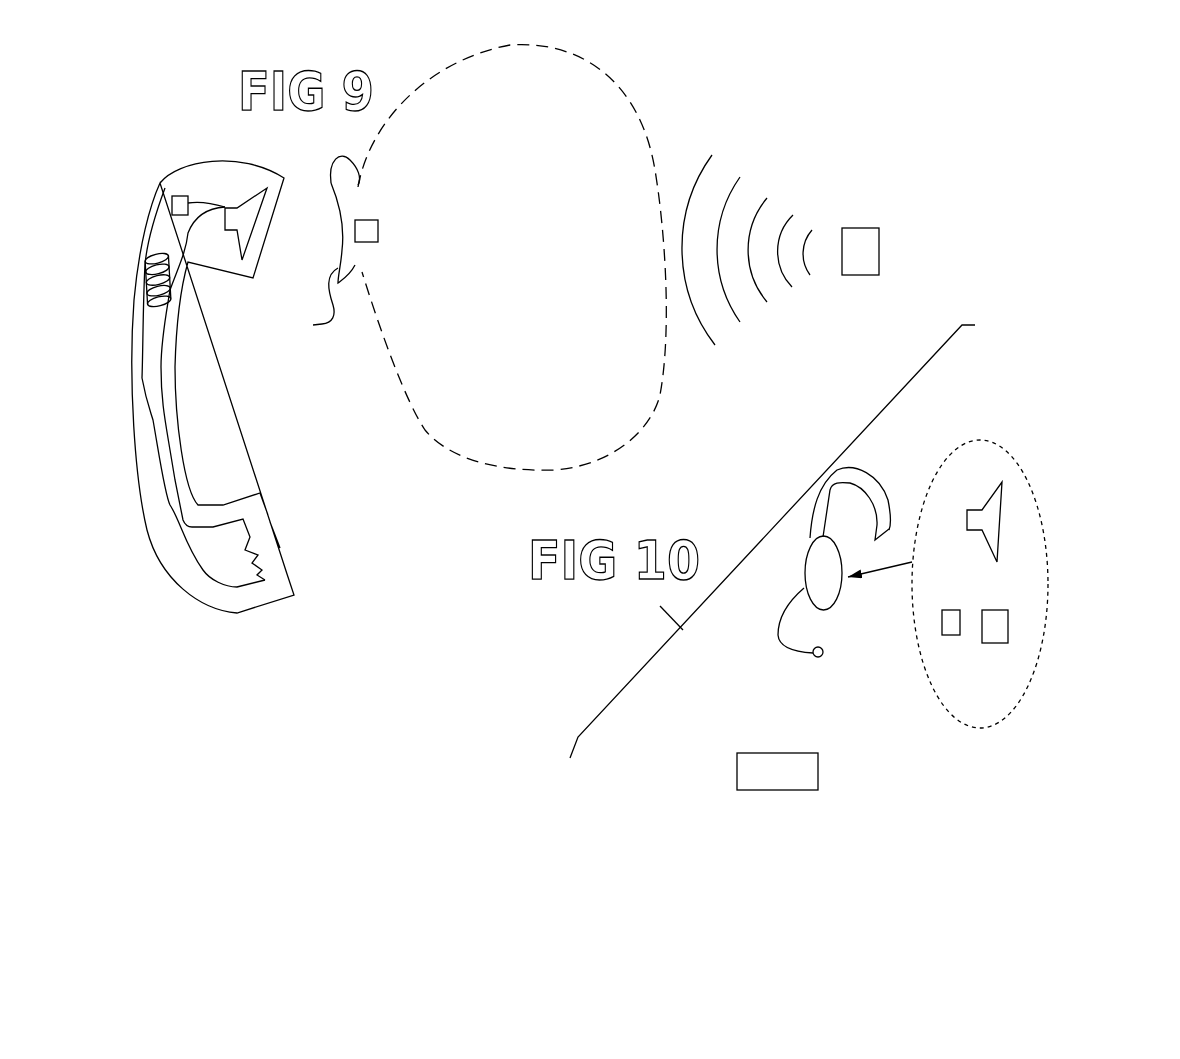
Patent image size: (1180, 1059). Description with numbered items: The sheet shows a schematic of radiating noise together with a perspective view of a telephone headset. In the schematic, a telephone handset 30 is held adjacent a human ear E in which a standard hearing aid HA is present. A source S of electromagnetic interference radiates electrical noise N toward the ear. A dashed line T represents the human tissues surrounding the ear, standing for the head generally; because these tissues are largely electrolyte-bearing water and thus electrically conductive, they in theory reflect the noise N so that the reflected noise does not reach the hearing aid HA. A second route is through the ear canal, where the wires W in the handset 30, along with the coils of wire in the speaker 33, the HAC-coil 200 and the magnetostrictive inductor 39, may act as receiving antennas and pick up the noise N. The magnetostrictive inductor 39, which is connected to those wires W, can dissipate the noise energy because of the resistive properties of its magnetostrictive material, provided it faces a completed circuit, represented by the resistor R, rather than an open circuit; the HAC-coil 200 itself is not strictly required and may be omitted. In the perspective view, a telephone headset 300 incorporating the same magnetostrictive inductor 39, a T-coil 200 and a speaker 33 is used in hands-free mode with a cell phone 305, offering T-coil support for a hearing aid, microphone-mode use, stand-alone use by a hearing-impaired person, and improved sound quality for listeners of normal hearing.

In FIG. 9, the HAC-coil 200 is at (178, 196).
In FIG. 10, the HAC-coil 200 is at (942, 622).
In FIG. 9, the speaker 33 is at (251, 195).
In FIG. 10, the speaker 33 is at (993, 496).
In FIG. 9, the magnetostrictive inductor 39 is at (134, 242).
In FIG. 10, the magnetostrictive inductor 39 is at (1008, 622).
In FIG. 9, the telephone handset 30 is at (176, 380).
In FIG. 10, the telephone headset 300 is at (771, 599).
In FIG. 10, the cell phone 305 is at (777, 771).
In FIG. 9, the wires W is at (175, 231).
In FIG. 9, the resistor R is at (275, 560).
In FIG. 9, the hearing aid HA is at (378, 228).
In FIG. 9, the ear E is at (326, 250).
In FIG. 9, the human tissues T is at (645, 138).
In FIG. 9, the source of EMI S is at (862, 275).
In FIG. 9, the radiated electrical noise N is at (758, 337).